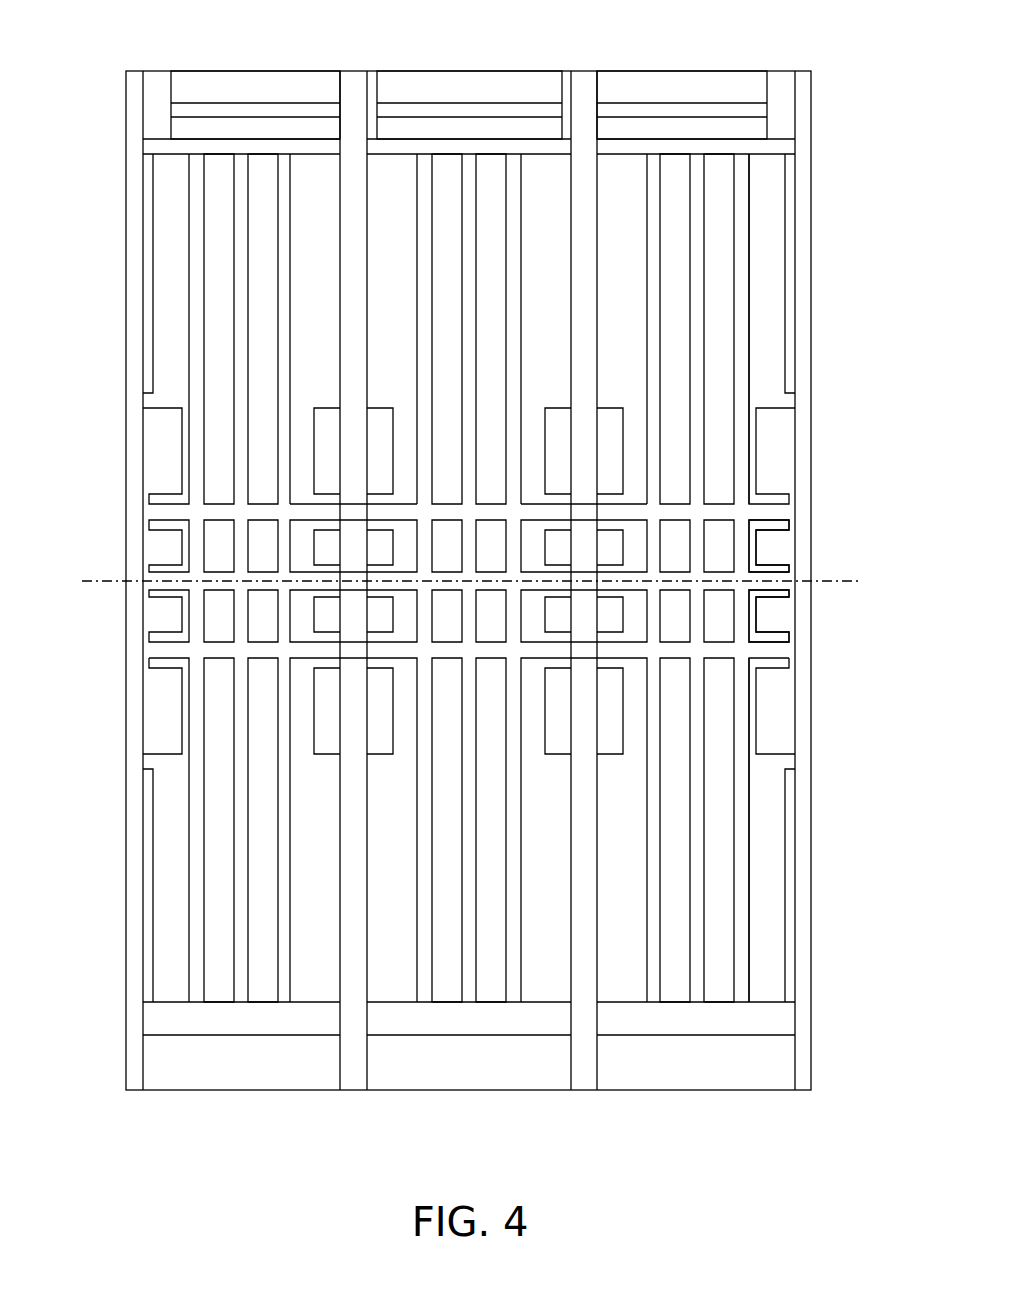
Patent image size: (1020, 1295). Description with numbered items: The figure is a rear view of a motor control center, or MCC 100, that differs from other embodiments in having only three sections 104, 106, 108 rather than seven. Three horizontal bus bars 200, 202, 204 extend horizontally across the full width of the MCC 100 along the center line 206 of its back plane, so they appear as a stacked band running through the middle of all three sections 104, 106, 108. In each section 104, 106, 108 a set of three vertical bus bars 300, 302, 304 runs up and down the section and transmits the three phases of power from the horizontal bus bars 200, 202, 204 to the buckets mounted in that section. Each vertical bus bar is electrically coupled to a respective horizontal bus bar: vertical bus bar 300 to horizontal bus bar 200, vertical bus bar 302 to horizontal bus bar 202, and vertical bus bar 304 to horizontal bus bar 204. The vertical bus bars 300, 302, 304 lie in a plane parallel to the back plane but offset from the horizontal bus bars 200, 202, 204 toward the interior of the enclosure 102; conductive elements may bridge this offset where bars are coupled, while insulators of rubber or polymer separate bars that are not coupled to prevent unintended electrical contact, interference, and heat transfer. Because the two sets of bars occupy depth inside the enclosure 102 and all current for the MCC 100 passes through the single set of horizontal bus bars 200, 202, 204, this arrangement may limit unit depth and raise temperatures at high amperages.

The MCC 100 is at (126, 305).
The enclosure 102 is at (126, 456).
The first section 104 is at (243, 90).
The second section 106 is at (472, 88).
The third section 108 is at (692, 90).
The first horizontal bus bar 200 is at (763, 507).
The second horizontal bus bar 202 is at (763, 578).
The third horizontal bus bar 204 is at (765, 640).
The center line 206 is at (120, 580).
The first vertical bus bar 300 is at (655, 187).
The second vertical bus bar 302 is at (697, 258).
The third vertical bus bar 304 is at (740, 325).